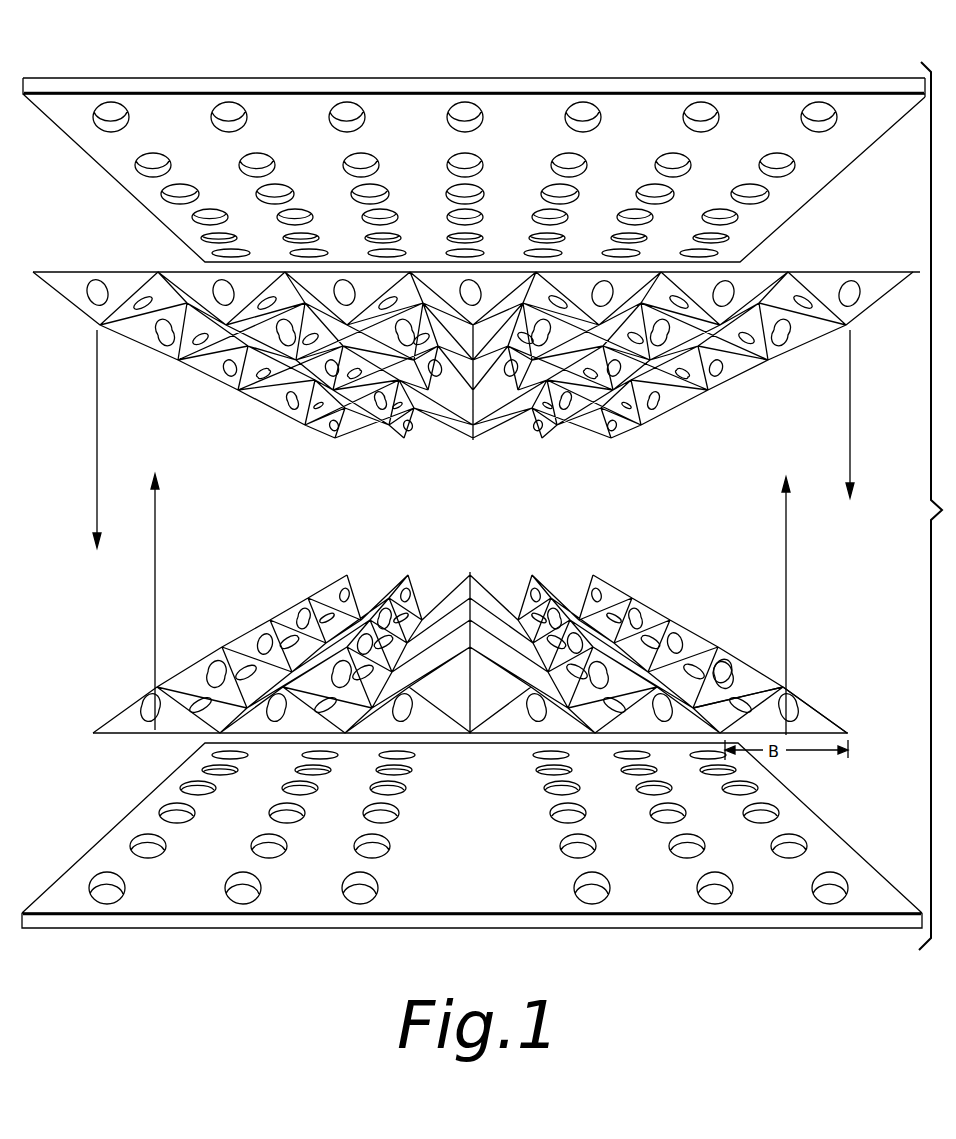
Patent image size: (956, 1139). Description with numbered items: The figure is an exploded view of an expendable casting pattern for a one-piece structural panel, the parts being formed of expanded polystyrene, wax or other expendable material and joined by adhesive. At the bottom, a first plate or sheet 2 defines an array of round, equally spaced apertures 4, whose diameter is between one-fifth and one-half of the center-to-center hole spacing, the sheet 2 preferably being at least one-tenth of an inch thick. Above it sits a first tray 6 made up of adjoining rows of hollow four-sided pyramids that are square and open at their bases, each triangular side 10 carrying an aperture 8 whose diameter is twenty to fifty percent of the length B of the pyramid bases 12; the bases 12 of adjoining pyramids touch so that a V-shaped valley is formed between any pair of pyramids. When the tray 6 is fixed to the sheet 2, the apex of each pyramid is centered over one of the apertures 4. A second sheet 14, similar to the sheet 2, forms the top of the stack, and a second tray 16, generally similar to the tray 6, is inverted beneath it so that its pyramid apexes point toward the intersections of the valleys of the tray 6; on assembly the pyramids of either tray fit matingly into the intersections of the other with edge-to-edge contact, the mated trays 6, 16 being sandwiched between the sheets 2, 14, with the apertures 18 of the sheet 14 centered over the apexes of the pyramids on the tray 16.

The first plate or sheet 2 is at (778, 792).
The apertures 4 is at (790, 848).
The first tray 6 is at (129, 690).
The aperture 8 is at (723, 664).
The triangular side 10 is at (745, 670).
The pyramid bases 12 is at (817, 733).
The second sheet 14 is at (786, 83).
The second tray 16 is at (777, 273).
The apertures 18 is at (694, 122).